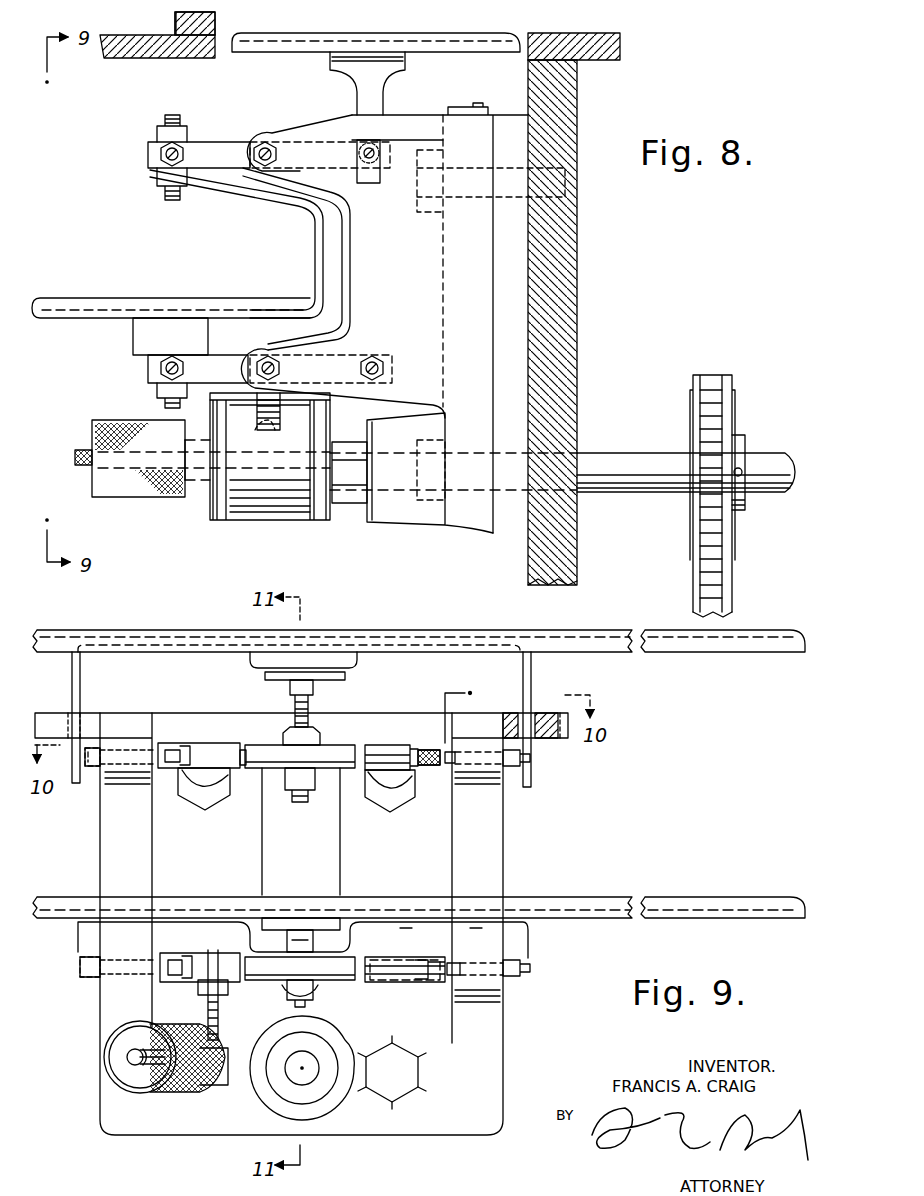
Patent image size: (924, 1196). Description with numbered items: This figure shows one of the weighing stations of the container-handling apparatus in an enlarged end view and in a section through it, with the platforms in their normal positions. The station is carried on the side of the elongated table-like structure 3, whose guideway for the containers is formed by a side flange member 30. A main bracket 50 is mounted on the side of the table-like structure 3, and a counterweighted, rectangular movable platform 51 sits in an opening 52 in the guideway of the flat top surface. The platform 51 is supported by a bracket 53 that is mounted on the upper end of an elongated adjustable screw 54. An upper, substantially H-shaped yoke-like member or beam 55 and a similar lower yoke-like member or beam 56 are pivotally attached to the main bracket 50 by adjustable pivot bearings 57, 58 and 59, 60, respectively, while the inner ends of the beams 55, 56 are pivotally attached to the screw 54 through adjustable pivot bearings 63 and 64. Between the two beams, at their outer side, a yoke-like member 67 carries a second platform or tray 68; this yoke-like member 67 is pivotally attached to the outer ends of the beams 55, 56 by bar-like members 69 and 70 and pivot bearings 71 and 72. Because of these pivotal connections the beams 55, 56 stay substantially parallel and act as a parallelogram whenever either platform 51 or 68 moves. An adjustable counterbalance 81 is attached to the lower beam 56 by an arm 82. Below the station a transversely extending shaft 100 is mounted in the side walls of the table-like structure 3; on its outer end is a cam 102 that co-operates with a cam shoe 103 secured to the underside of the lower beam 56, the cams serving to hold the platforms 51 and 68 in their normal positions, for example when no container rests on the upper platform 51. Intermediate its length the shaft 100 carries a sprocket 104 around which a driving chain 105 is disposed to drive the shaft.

In FIG. 8, the table-like structure 3 is at (577, 294).
In FIG. 8, the side flange member 30 is at (178, 22).
In FIG. 8, the main bracket 50 is at (482, 258).
In FIG. 9, the main bracket 50 is at (500, 856).
In FIG. 8, the movable platform 51 is at (433, 46).
In FIG. 9, the movable platform 51 is at (442, 632).
In FIG. 8, the opening 52 is at (520, 38).
In FIG. 8, the bracket 53 is at (327, 63).
In FIG. 9, the bracket 53 is at (250, 672).
In FIG. 9, the adjustable screw 54 is at (308, 706).
In FIG. 8, the upper yoke-like member 55 is at (206, 140).
In FIG. 9, the upper yoke-like member 55 is at (398, 745).
In FIG. 8, the lower yoke-like member 56 is at (233, 362).
In FIG. 9, the lower yoke-like member 56 is at (408, 985).
In FIG. 8, the adjustable pivot bearing 57 is at (268, 142).
In FIG. 9, the adjustable pivot bearing 57 is at (155, 745).
In FIG. 9, the adjustable pivot bearing 58 is at (452, 752).
In FIG. 9, the adjustable pivot bearing 59 is at (157, 976).
In FIG. 8, the adjustable pivot bearing 60 is at (290, 358).
In FIG. 9, the adjustable pivot bearing 60 is at (452, 970).
In FIG. 8, the adjustable pivot bearing 63 is at (385, 138).
In FIG. 8, the adjustable pivot bearing 64 is at (382, 358).
In FIG. 8, the yoke-like member 67 is at (342, 252).
In FIG. 9, the yoke-like member 67 is at (340, 846).
In FIG. 8, the second platform 68 is at (105, 297).
In FIG. 9, the second platform 68 is at (650, 900).
In FIG. 9, the bar-like member 69 is at (265, 760).
In FIG. 9, the bar-like member 70 is at (338, 983).
In FIG. 8, the pivot bearing 71 is at (160, 156).
In FIG. 9, the pivot bearing 71 is at (245, 752).
In FIG. 8, the pivot bearing 72 is at (160, 370).
In FIG. 9, the pivot bearing 72 is at (243, 982).
In FIG. 8, the adjustable counterbalance 81 is at (125, 486).
In FIG. 9, the adjustable counterbalance 81 is at (148, 1083).
In FIG. 8, the arm 82 is at (78, 453).
In FIG. 9, the arm 82 is at (208, 1010).
In FIG. 8, the shaft 100 is at (612, 458).
In FIG. 9, the shaft 100 is at (310, 1075).
In FIG. 8, the cam 102 is at (228, 522).
In FIG. 9, the cam 102 is at (352, 1040).
In FIG. 8, the cam shoe 103 is at (214, 391).
In FIG. 9, the cam shoe 103 is at (284, 1001).
In FIG. 8, the sprocket 104 is at (734, 418).
In FIG. 8, the driving chain 105 is at (718, 584).